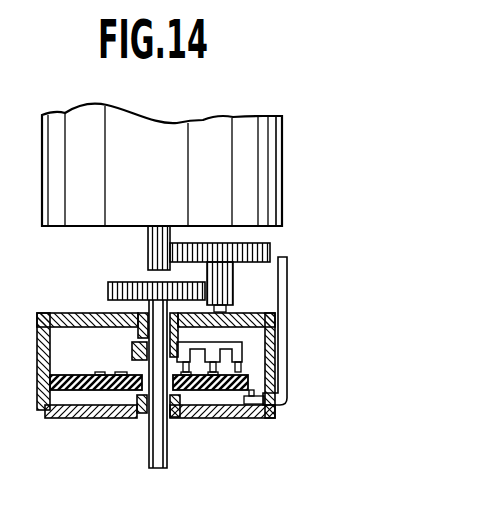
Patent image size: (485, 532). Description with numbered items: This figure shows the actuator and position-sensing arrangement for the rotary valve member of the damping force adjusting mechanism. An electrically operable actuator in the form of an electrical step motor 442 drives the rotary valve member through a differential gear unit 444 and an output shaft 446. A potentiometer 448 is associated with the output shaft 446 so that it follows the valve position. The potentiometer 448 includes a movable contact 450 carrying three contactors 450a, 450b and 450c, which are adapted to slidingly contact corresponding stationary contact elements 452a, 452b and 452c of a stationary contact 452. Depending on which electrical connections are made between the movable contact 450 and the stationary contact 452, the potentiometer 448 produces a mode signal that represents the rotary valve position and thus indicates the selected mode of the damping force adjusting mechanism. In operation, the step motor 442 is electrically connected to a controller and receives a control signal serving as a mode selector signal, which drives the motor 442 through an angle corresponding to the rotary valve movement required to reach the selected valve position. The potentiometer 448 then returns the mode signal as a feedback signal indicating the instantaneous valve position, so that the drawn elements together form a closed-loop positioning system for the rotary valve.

The electrical step motor 442 is at (283, 151).
The differential gear unit 444 is at (275, 240).
The output shaft 446 is at (143, 307).
The potentiometer 448 is at (255, 335).
The movable contact 450 is at (220, 343).
The contactor 450a is at (195, 393).
The contactor 450b is at (227, 393).
The contactor 450c is at (242, 357).
The stationary contact 452 is at (170, 390).
The stationary contact element 452a is at (183, 392).
The stationary contact element 452b is at (208, 358).
The stationary contact element 452c is at (288, 372).